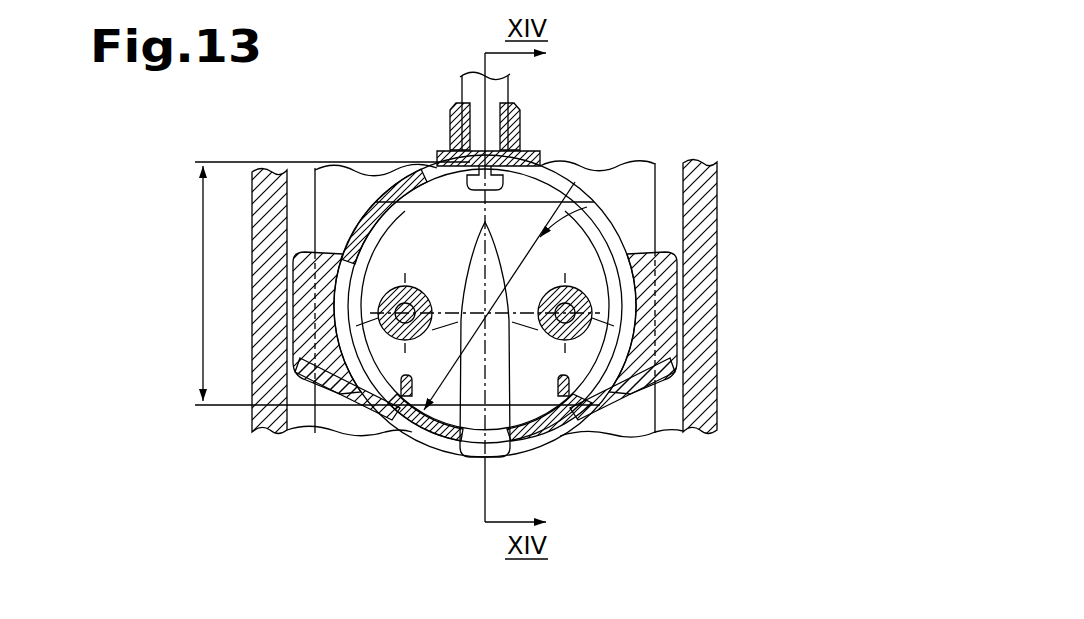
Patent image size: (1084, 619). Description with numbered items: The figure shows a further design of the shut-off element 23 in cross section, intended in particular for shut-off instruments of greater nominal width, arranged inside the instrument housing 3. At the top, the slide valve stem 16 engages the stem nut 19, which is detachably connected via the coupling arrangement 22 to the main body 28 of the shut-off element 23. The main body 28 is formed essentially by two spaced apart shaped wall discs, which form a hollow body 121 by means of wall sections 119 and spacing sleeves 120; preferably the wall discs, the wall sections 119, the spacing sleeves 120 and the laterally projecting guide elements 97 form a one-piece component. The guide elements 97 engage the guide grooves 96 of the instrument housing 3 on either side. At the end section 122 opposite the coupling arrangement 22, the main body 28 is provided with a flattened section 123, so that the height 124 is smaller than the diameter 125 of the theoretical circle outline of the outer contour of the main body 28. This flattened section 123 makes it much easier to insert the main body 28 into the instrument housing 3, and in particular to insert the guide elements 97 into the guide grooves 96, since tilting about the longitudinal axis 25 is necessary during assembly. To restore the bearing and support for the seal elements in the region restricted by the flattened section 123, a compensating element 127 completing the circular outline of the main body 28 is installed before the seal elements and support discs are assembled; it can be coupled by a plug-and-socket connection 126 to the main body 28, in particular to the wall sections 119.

The instrument housing 3 is at (700, 248).
The slide valve stem 16 is at (473, 92).
The stem nut 19 is at (515, 120).
The detachable coupling arrangement 22 is at (460, 185).
The shut-off element 23 is at (628, 145).
The longitudinal axis 25 is at (462, 288).
The main body 28 is at (668, 172).
The guide grooves 96 is at (302, 432).
The guide elements 97 is at (640, 330).
The wall sections 119 is at (556, 153).
The spacing sleeves 120 is at (620, 287).
The hollow body 121 is at (623, 158).
The end section 122 is at (604, 413).
The flattened section 123 is at (572, 428).
The height 124 is at (203, 283).
The diameter 125 is at (615, 242).
The plug-and-socket connection 126 is at (598, 432).
The compensating element 127 is at (551, 422).